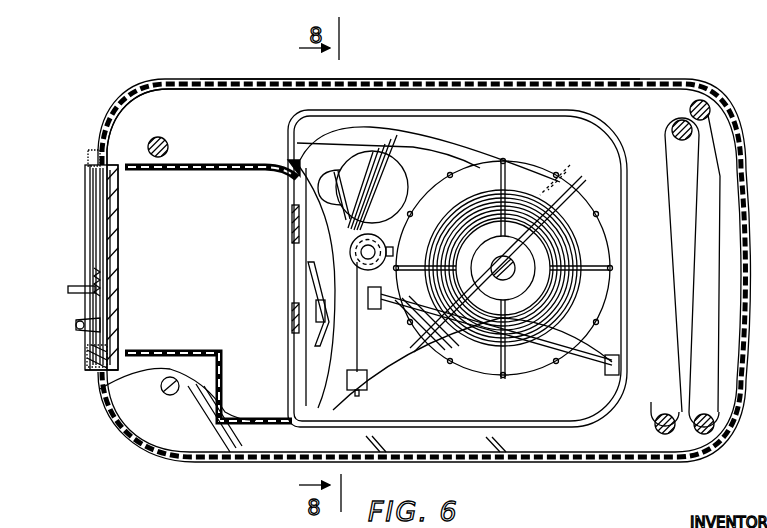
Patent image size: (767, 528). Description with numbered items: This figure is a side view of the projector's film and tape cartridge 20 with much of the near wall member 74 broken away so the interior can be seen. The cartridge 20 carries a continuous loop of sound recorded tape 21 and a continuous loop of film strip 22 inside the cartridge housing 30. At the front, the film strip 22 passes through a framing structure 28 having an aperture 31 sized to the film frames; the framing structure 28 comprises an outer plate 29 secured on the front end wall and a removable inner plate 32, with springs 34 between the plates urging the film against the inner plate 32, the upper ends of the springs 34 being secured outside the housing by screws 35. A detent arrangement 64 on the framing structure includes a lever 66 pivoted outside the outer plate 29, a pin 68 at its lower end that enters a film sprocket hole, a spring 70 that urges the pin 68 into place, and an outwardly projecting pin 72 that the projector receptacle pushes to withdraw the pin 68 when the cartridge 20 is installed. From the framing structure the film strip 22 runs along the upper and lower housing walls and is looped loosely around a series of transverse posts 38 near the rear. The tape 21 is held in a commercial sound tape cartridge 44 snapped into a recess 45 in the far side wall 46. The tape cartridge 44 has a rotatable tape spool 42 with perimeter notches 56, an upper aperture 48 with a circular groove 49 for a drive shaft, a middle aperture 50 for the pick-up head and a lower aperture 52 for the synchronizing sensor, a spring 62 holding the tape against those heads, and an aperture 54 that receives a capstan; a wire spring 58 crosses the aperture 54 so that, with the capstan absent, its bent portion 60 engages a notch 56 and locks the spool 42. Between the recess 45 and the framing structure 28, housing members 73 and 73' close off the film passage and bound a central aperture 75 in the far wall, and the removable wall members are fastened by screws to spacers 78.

The cartridge 20 is at (565, 72).
The sound recorded tape 21 is at (408, 372).
The film strip 22 is at (173, 93).
The framing structure 28 is at (82, 172).
The outer plate 29 is at (98, 185).
The cartridge housing 30 is at (249, 74).
The aperture 31 is at (117, 256).
The inner plate 32 is at (116, 199).
The springs 34 is at (117, 299).
The screws 35 is at (93, 160).
The transverse posts 38 is at (698, 125).
The tape spool 42 is at (486, 173).
The sound tape cartridge 44 is at (487, 106).
The recess 45 is at (414, 110).
The side wall 46 is at (258, 125).
The upper aperture 48 is at (293, 209).
The circular groove 49 is at (298, 183).
The middle aperture 50 is at (294, 258).
The lower aperture 52 is at (293, 339).
The aperture 54 is at (372, 182).
The notches 56 is at (489, 382).
The wire spring 58 is at (340, 192).
The bent portion 60 is at (393, 249).
The spring 62 is at (318, 288).
The detent arrangement 64 is at (78, 330).
The lever 66 is at (84, 352).
The pin 68 is at (93, 370).
The spring 70 is at (96, 275).
The outwardly projecting pin 72 is at (68, 291).
The housing member 73 is at (211, 188).
The housing member 73' is at (208, 368).
The wall member 74 is at (182, 430).
The central aperture 75 is at (189, 264).
The spacers 78 is at (165, 141).